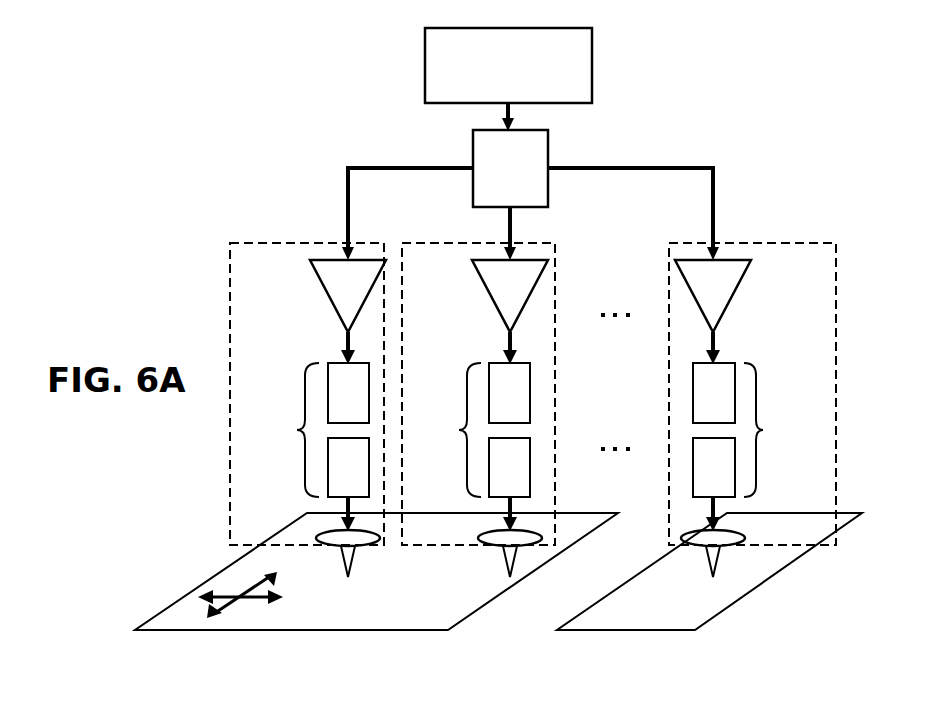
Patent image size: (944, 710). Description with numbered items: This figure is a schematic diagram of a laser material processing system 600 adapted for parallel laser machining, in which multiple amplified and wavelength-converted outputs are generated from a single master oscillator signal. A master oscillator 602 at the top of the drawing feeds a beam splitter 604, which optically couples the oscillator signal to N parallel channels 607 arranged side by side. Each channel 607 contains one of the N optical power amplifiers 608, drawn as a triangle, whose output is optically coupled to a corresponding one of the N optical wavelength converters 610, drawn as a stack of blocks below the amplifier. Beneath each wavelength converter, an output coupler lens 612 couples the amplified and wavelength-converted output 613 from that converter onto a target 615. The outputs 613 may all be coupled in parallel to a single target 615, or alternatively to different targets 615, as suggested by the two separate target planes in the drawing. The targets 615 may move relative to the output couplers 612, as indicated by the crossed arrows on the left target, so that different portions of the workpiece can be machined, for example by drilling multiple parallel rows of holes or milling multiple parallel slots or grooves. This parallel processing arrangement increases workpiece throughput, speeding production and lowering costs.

The laser material processing system 600 is at (712, 87).
The master oscillator 602 is at (425, 65).
The beam splitter 604 is at (473, 153).
The amplifier channel 607 is at (781, 224).
The optical power amplifier 608 is at (328, 298).
The optical wavelength converter 610 is at (785, 418).
The output coupler lens 612 is at (320, 538).
The amplified and wavelength-converted output 613 is at (352, 566).
The target 615 is at (292, 630).